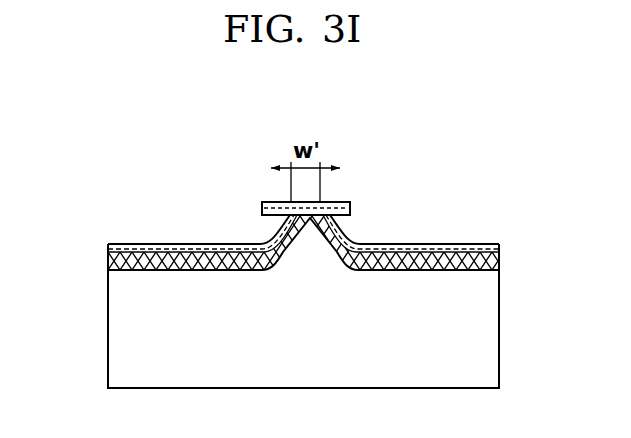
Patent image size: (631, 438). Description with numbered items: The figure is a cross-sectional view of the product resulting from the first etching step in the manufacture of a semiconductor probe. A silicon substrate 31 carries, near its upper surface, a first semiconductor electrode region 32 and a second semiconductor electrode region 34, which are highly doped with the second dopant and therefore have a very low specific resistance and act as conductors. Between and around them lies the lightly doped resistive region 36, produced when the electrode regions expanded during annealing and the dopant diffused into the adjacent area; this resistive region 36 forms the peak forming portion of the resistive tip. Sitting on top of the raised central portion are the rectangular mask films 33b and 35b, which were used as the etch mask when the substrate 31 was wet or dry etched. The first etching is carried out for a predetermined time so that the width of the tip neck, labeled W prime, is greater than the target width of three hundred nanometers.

The silicon substrate 31 is at (315, 350).
The first semiconductor electrode region 32 is at (163, 244).
The second semiconductor electrode region 34 is at (468, 244).
The resistive region 36 is at (108, 258).
The mask film 33b is at (350, 211).
The mask film 35b is at (350, 206).